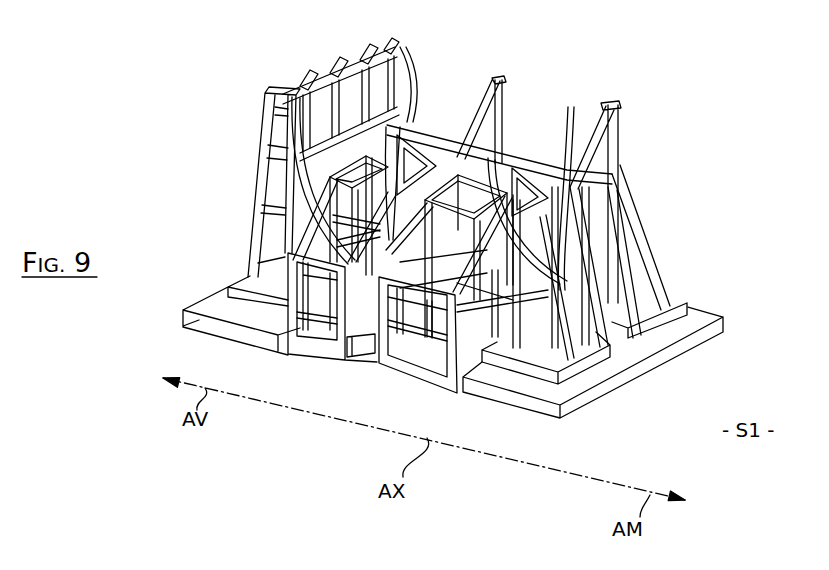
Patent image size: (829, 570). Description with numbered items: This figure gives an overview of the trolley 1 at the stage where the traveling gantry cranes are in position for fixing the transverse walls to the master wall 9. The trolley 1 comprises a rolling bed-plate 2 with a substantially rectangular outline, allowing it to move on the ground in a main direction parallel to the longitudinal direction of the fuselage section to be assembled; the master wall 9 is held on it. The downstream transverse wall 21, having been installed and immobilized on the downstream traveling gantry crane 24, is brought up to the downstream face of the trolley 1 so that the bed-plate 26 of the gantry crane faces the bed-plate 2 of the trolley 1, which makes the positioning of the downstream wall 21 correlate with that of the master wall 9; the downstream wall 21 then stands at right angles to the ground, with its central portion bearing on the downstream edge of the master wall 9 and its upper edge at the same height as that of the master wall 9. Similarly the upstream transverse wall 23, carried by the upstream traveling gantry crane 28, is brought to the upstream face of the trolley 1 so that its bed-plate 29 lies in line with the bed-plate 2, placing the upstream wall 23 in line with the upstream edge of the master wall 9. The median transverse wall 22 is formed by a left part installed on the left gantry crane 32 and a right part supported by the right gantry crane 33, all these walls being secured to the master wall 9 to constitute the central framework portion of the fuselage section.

The trolley 1 is at (540, 147).
The rolling bed-plate 2 is at (390, 370).
The master wall 9 is at (478, 132).
The downstream transverse wall 21 is at (323, 165).
The median transverse wall 22 is at (460, 160).
The upstream transverse wall 23 is at (568, 180).
The downstream traveling gantry crane 24 is at (239, 158).
The bed-plate of the downstream gantry crane 26 is at (183, 326).
The upstream traveling gantry crane 28 is at (663, 213).
The bed-plate of the upstream gantry crane 29 is at (585, 396).
The left gantry crane 32 is at (513, 123).
The right gantry crane 33 is at (420, 135).